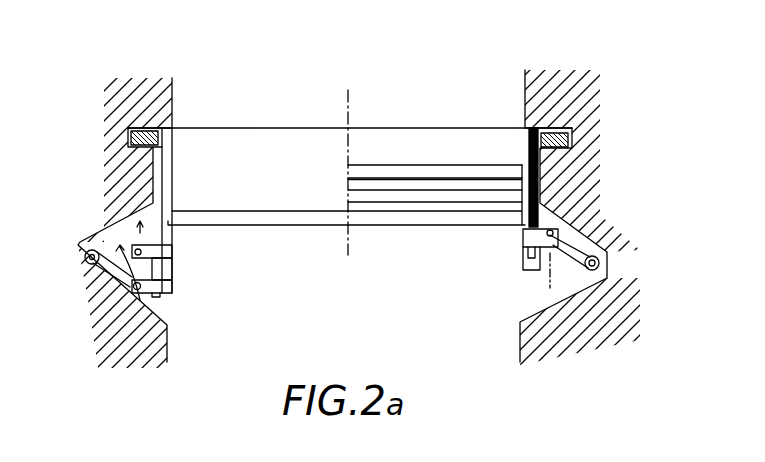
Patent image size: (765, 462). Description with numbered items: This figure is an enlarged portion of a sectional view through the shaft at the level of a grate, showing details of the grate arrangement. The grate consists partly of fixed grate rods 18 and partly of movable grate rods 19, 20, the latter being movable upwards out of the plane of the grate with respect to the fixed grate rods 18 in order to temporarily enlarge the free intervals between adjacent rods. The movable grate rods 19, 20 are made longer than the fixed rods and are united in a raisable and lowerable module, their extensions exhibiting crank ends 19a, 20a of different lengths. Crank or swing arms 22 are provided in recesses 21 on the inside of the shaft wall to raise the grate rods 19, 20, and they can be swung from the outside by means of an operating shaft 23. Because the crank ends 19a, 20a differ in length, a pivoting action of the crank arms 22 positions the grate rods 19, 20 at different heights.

The fixed grate rod 18 is at (475, 216).
The movable grate rod 19 is at (453, 200).
The movable grate rod 20 is at (402, 172).
The crank end 19a is at (172, 252).
The crank end 20a is at (160, 291).
The recess 21 is at (527, 300).
The crank arm 22 is at (577, 258).
The operating shaft 23 is at (607, 262).